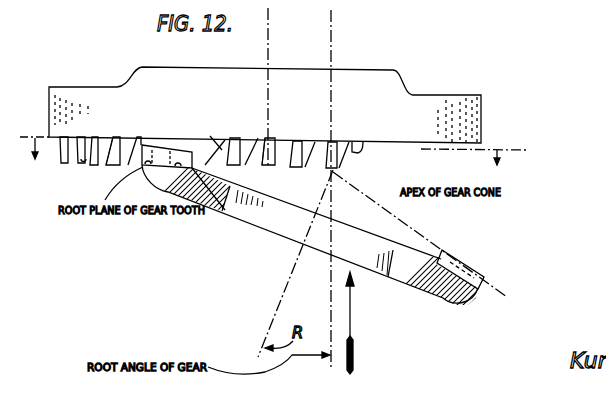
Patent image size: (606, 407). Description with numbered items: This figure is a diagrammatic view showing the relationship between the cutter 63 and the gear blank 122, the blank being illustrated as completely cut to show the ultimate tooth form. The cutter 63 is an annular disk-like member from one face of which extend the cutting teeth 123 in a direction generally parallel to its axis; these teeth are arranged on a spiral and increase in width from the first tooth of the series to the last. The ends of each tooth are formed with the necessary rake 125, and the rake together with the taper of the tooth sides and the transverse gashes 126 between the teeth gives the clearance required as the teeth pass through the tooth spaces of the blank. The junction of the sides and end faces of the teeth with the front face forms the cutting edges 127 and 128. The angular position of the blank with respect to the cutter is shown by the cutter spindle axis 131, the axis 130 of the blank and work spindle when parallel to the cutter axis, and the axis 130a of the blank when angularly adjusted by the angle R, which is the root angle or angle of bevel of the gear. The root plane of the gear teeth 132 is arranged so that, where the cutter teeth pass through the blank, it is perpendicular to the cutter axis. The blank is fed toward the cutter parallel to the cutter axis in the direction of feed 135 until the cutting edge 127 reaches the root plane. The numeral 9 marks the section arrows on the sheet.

The cutter 63 is at (442, 103).
The cutting teeth 123 is at (105, 144).
The rake 125 is at (83, 162).
The cutting edge 127 is at (108, 162).
The transverse gashes 126 is at (266, 138).
The cutting edge 128 is at (222, 150).
The section plane 9 is at (273, 163).
The cutter axis 131 is at (268, 30).
The axis of the gear blank and work spindle 130 is at (331, 30).
The axis of the blank and work spindle when angularly adjusted 130a is at (284, 297).
The gear blank 122 is at (446, 300).
The root plane of the gear teeth 132 is at (210, 208).
The direction of feed 135 is at (351, 297).